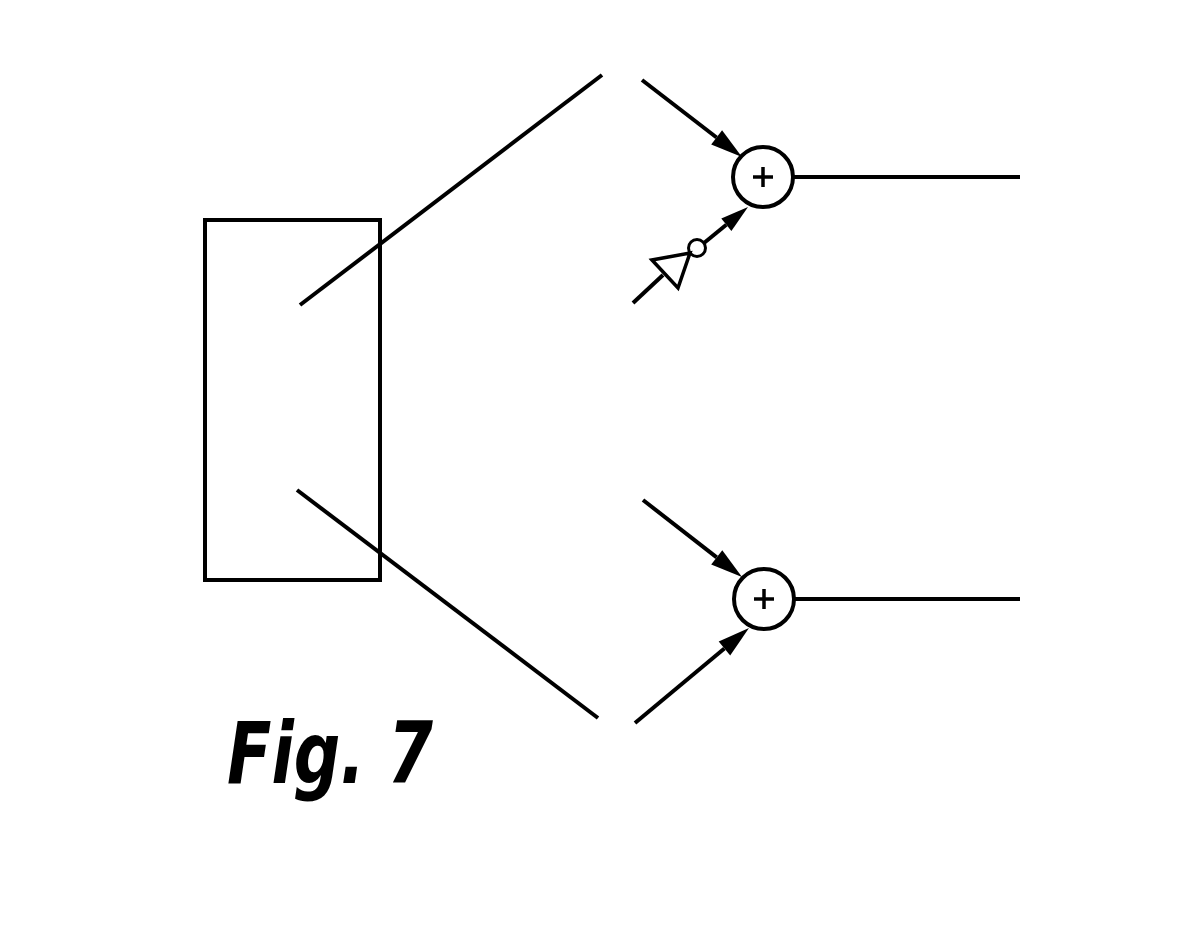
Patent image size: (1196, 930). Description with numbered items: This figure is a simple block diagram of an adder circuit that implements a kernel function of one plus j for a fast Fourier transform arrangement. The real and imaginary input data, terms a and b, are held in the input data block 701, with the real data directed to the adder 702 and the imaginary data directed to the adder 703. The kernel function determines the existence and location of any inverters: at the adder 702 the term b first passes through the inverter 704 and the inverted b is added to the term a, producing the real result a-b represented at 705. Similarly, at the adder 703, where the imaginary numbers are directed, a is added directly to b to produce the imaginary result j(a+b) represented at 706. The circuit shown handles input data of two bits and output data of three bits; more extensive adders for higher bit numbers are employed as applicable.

The input data block 701 is at (283, 220).
The adder 702 is at (770, 145).
The adder 703 is at (782, 626).
The inverter 704 is at (678, 290).
The result a-b 705 is at (1053, 178).
The imaginary result j(a+b) 706 is at (1053, 599).